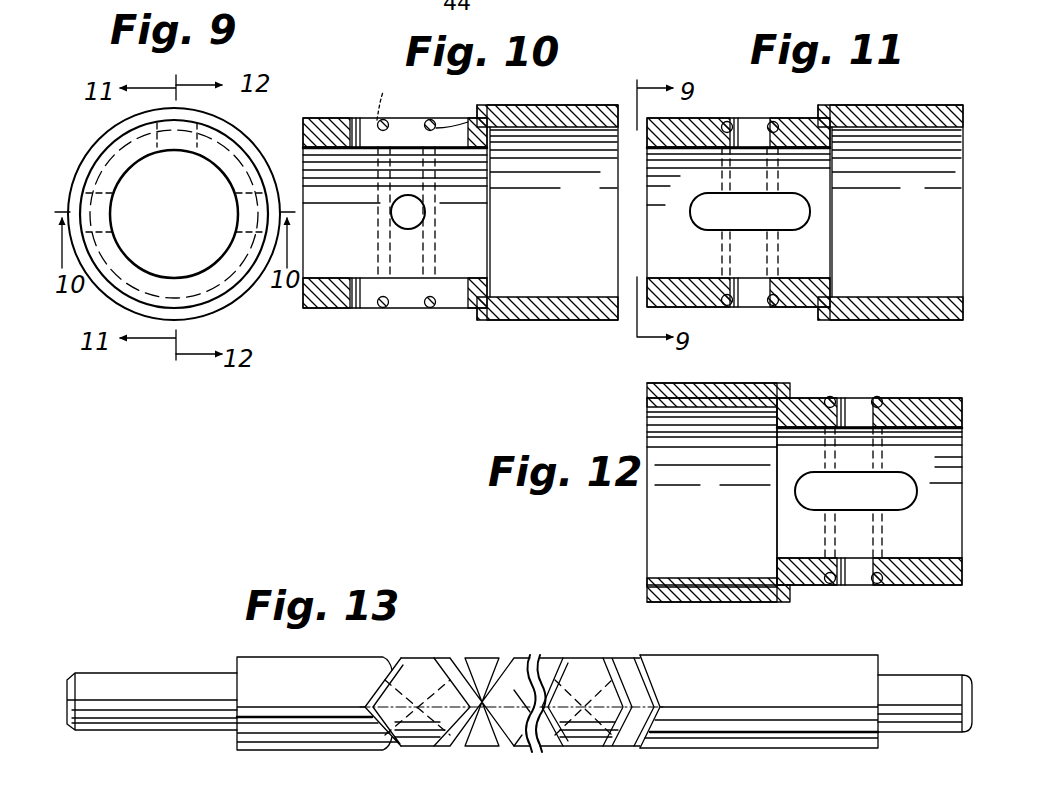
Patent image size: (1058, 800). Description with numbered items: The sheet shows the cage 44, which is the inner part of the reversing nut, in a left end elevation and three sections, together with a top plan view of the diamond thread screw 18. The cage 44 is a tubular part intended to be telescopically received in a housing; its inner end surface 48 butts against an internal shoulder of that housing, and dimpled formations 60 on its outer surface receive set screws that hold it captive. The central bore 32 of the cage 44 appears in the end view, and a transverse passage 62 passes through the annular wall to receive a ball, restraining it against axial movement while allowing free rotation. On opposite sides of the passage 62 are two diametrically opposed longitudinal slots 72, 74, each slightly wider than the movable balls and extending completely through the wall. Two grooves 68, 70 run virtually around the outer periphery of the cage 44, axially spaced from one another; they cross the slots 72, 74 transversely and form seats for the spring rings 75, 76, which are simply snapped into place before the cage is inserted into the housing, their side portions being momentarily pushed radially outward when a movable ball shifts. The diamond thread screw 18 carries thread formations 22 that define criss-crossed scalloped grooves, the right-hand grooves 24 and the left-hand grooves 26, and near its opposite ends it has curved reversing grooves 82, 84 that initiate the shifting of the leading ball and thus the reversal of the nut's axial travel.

In FIG. 13, the diamond thread screw 18 is at (508, 640).
In FIG. 13, the thread formations 22 is at (480, 662).
In FIG. 13, the grooves 24 is at (500, 748).
In FIG. 13, the grooves 26 is at (556, 668).
In FIG. 9, the sleeve body 32 is at (141, 165).
In FIG. 10, the sleeve body 32 is at (327, 268).
In FIG. 11, the sleeve body 32 is at (730, 275).
In FIG. 12, the sleeve body 32 is at (869, 491).
In FIG. 9, the cage 44 is at (96, 148).
In FIG. 10, the cage 44 is at (493, 324).
In FIG. 11, the cage 44 is at (788, 310).
In FIG. 12, the cage 44 is at (850, 590).
In FIG. 10, the inner end surface 48 is at (317, 118).
In FIG. 12, the inner end surface 48 is at (955, 588).
In FIG. 11, the dimpled formations 60 is at (896, 108).
In FIG. 12, the dimpled formations 60 is at (708, 388).
In FIG. 9, the transverse passage 62 is at (222, 130).
In FIG. 10, the transverse passage 62 is at (418, 217).
In FIG. 11, the transverse passage 62 is at (752, 130).
In FIG. 12, the transverse passage 62 is at (858, 418).
In FIG. 10, the groove 68 is at (378, 120).
In FIG. 11, the groove 68 is at (730, 120).
In FIG. 12, the groove 68 is at (882, 398).
In FIG. 10, the groove 70 is at (440, 128).
In FIG. 11, the groove 70 is at (785, 128).
In FIG. 12, the groove 70 is at (826, 398).
In FIG. 9, the longitudinal slot 72 is at (232, 236).
In FIG. 10, the longitudinal slot 72 is at (398, 135).
In FIG. 12, the longitudinal slot 72 is at (855, 497).
In FIG. 9, the longitudinal slot 74 is at (112, 236).
In FIG. 10, the longitudinal slot 74 is at (405, 290).
In FIG. 11, the longitudinal slot 74 is at (752, 212).
In FIG. 10, the spring ring 75 is at (382, 118).
In FIG. 11, the spring ring 75 is at (725, 120).
In FIG. 12, the spring ring 75 is at (877, 396).
In FIG. 10, the spring ring 76 is at (430, 118).
In FIG. 11, the spring ring 76 is at (776, 120).
In FIG. 12, the spring ring 76 is at (830, 395).
In FIG. 13, the reversing groove 82 is at (366, 694).
In FIG. 13, the reversing groove 84 is at (656, 704).